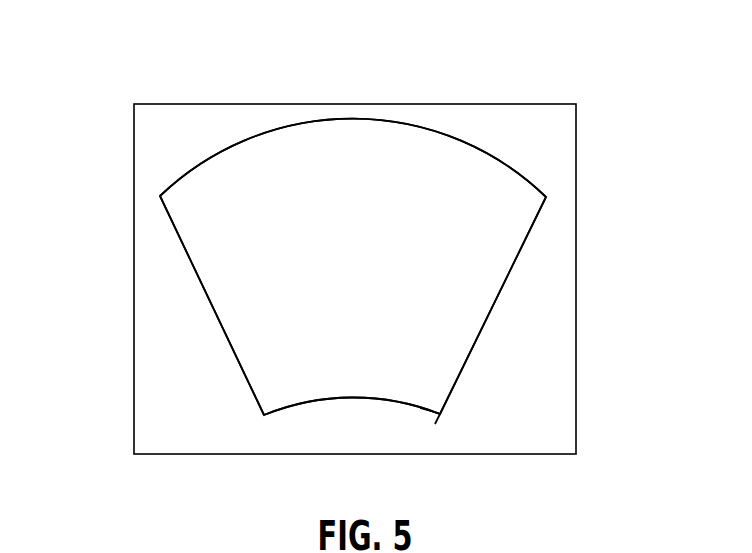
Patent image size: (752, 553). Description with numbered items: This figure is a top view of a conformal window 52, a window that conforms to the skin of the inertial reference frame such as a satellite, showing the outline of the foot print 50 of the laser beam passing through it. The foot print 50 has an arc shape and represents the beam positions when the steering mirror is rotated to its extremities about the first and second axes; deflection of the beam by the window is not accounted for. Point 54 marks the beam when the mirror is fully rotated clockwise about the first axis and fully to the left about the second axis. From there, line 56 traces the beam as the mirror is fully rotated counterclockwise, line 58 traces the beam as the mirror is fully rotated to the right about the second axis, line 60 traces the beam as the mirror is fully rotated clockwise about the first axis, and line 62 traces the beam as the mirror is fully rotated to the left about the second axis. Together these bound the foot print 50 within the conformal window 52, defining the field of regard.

The foot print 50 is at (198, 162).
The conformal window 52 is at (155, 410).
The point 54 is at (440, 414).
The line 56 is at (492, 310).
The line 58 is at (440, 133).
The line 60 is at (207, 297).
The line 62 is at (305, 405).